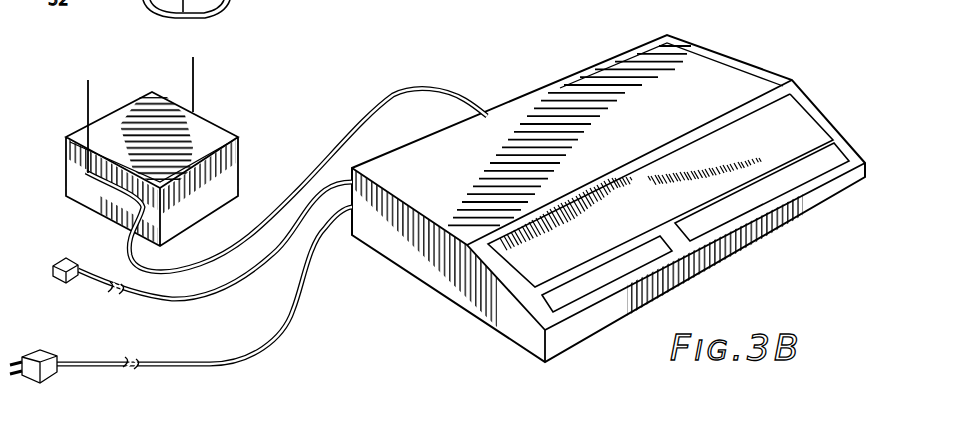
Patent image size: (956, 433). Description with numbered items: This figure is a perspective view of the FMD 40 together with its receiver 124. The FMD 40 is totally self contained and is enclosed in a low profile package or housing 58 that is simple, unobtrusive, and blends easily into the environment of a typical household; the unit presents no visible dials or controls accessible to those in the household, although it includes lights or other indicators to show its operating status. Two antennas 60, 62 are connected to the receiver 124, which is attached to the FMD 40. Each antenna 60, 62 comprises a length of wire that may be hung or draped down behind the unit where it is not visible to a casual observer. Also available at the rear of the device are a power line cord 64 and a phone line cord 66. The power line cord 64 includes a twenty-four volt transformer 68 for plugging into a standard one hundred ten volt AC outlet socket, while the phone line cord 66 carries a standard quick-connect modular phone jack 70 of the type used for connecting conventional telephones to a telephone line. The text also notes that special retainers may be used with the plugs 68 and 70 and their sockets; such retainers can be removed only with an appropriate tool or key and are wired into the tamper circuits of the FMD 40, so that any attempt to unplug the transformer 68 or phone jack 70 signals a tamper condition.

The FMD 40 is at (759, 33).
The housing 58 is at (763, 77).
The antenna 60 is at (88, 97).
The antenna 62 is at (193, 95).
The receiver 124 is at (222, 137).
The quick-connect modular phone jack 70 is at (57, 259).
The phone line cord 66 is at (170, 299).
The power line cord 64 is at (217, 361).
The transformer 68 is at (43, 353).